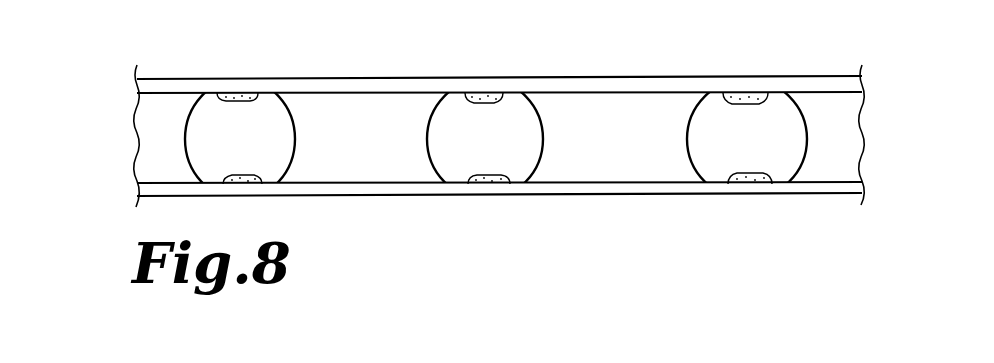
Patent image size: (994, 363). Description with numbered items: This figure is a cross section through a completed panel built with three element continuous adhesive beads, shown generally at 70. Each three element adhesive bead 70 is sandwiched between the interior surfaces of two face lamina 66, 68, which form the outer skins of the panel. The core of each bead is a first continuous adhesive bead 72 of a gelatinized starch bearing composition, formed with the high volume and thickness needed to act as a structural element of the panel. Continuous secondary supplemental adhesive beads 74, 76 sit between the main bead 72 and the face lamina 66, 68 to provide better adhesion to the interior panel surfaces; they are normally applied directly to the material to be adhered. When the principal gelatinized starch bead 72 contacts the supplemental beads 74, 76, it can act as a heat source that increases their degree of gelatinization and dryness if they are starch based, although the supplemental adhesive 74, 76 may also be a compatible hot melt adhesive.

The face lamina 66 is at (638, 77).
The face lamina 68 is at (613, 195).
The three element adhesive bead 70 is at (165, 140).
The first continuous adhesive bead 72 is at (544, 141).
The secondary supplemental adhesive bead 74 is at (478, 100).
The secondary supplemental adhesive bead 76 is at (485, 176).